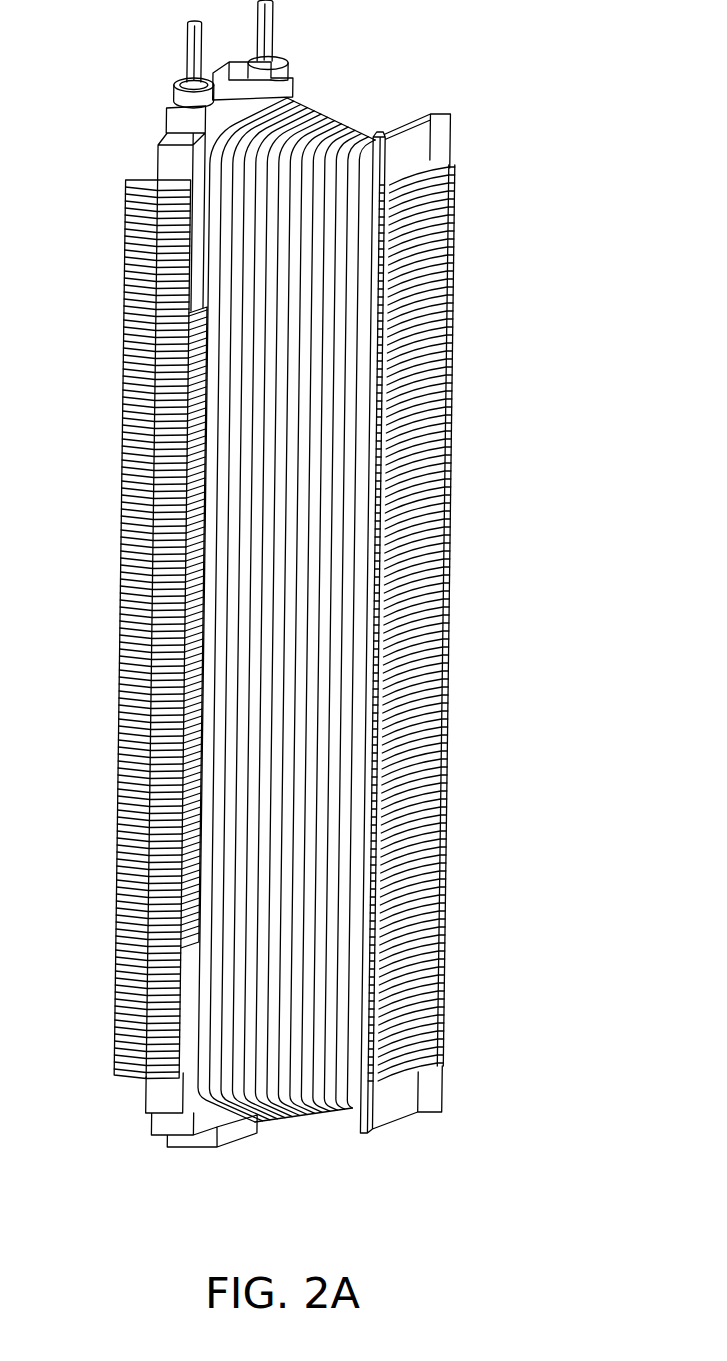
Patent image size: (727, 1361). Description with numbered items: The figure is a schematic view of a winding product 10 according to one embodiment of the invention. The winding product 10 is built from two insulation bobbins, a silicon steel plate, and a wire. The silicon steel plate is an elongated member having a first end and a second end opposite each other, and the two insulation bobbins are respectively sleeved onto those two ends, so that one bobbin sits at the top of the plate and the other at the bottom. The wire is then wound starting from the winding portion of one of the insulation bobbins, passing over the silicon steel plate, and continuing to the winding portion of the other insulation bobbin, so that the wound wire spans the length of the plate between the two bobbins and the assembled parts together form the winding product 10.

The winding product 10 is at (322, 611).